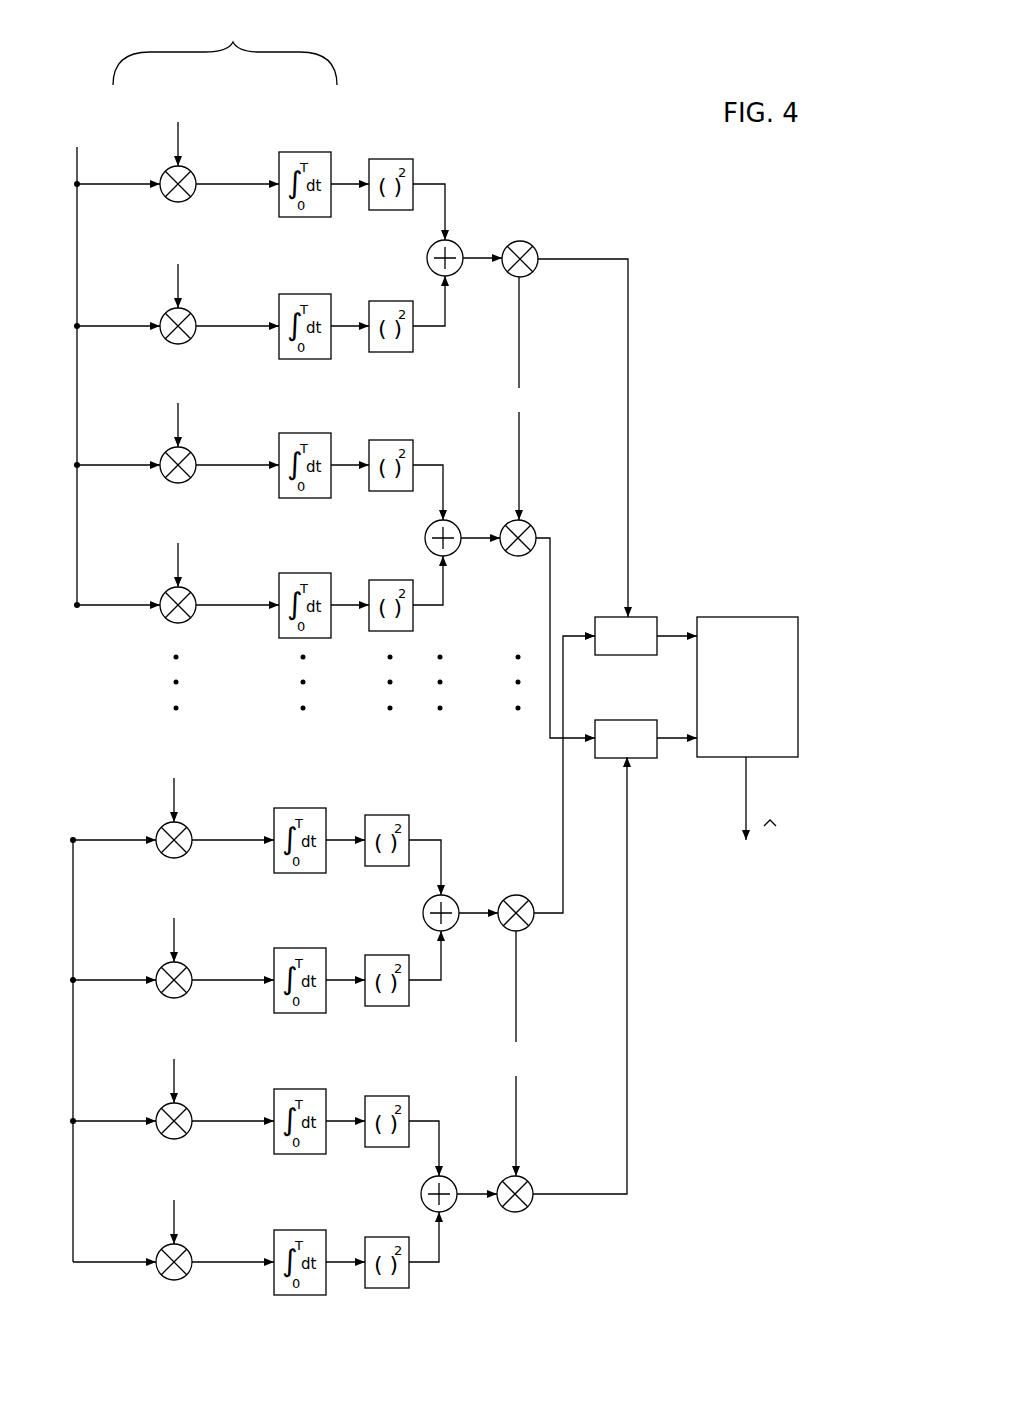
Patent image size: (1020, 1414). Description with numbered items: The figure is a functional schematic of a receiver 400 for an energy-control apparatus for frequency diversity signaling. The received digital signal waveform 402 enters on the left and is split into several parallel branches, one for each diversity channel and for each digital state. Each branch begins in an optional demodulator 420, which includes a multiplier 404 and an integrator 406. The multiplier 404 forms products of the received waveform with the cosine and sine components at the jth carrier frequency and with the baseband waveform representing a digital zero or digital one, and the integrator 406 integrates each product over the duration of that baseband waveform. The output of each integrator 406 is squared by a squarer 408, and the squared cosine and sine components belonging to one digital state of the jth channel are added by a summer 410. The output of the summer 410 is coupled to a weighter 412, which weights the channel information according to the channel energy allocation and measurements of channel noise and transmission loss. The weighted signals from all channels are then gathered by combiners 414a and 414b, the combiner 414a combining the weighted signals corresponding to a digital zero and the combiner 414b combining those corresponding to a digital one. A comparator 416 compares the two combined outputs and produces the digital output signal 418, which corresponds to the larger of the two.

The receiver 400 is at (523, 170).
The received digital signal waveform 402 is at (79, 296).
The multiplier 404 is at (195, 176).
The integrator 406 is at (304, 152).
The squarer 408 is at (391, 161).
The summer 410 is at (427, 258).
The weighter 412 is at (515, 240).
The combiner 414a is at (648, 617).
The combiner 414b is at (650, 757).
The comparator 416 is at (747, 617).
The digital output signal 418 is at (770, 852).
The demodulator 420 is at (225, 46).